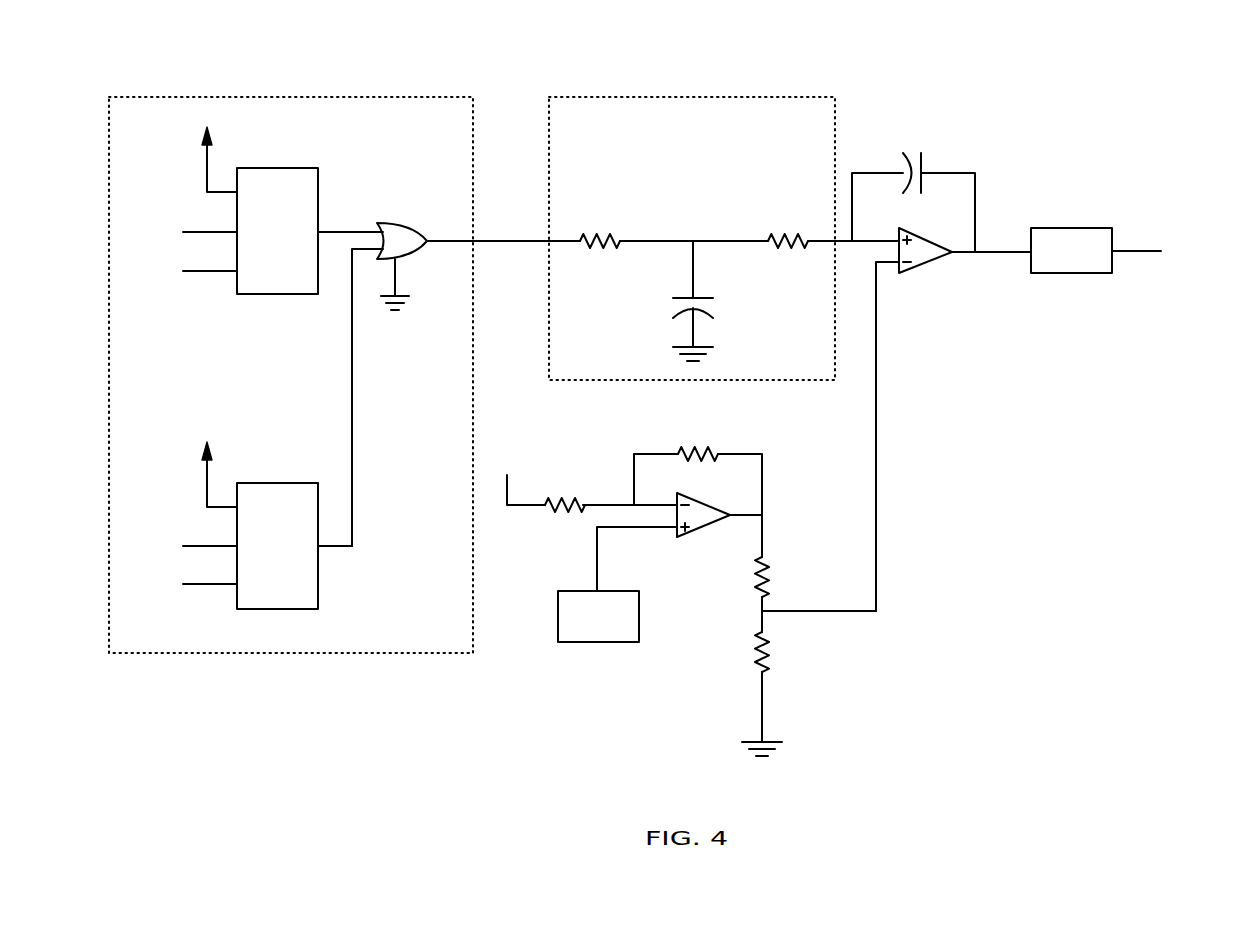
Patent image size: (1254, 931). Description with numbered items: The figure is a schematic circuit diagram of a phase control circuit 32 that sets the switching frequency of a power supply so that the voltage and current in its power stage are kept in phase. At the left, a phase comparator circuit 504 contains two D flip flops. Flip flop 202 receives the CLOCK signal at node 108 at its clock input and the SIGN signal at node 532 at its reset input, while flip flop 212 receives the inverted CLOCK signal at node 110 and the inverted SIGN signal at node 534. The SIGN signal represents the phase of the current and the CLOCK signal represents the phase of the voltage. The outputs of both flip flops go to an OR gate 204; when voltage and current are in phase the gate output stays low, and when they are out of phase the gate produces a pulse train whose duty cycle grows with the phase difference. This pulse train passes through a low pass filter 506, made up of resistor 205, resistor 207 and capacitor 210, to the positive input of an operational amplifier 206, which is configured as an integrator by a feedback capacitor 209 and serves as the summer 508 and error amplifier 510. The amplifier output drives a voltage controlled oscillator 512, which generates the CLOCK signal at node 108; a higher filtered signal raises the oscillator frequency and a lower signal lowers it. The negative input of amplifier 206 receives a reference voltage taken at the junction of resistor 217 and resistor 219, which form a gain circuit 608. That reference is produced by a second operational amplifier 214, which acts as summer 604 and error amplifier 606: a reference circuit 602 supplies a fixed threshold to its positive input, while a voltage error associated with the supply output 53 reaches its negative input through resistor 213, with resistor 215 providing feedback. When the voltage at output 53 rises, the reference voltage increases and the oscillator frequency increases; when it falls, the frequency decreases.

The phase control circuit 32 is at (1130, 127).
The output 53 is at (524, 507).
The node 108 is at (197, 232).
The node 110 is at (197, 546).
The flip flop 202 is at (290, 168).
The OR gate 204 is at (395, 222).
The resistor 205 is at (600, 234).
The operational amplifier 206 is at (933, 261).
The resistor 207 is at (786, 234).
The capacitor 209 is at (921, 160).
The capacitor 210 is at (704, 298).
The flip flop 212 is at (290, 483).
The resistor 213 is at (566, 500).
The operational amplifier 214 is at (684, 538).
The resistor 215 is at (709, 448).
The resistor 217 is at (764, 562).
The resistor 219 is at (760, 668).
The phase comparator circuit 504 is at (436, 97).
The low pass filter 506 is at (810, 97).
The summer 508 is at (984, 330).
The error amplifier 510 is at (984, 330).
The voltage controlled oscillator 512 is at (1080, 228).
The node 532 is at (197, 272).
The node 534 is at (197, 585).
The reference circuit 602 is at (578, 643).
The summer 604 is at (630, 548).
The error amplifier 606 is at (784, 462).
The gain circuit 608 is at (809, 579).